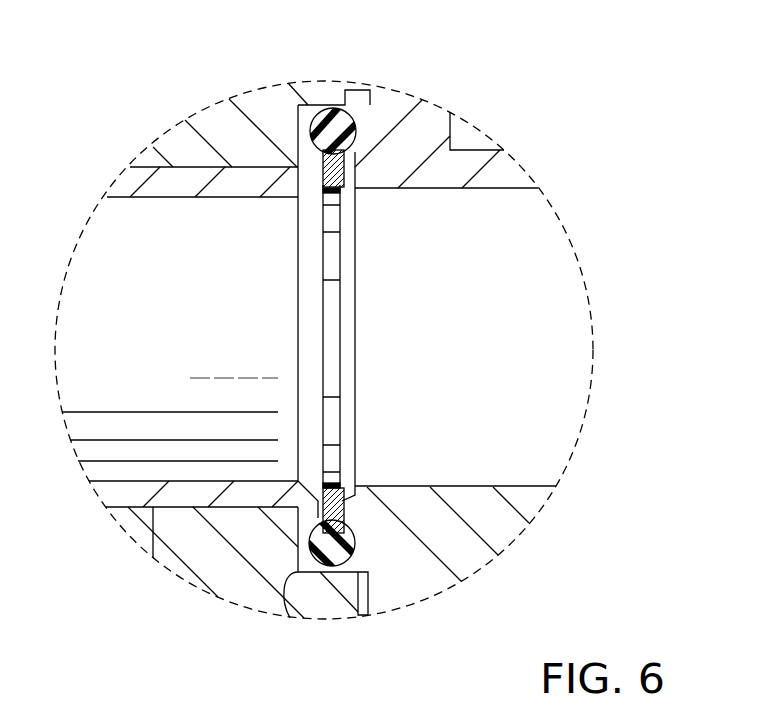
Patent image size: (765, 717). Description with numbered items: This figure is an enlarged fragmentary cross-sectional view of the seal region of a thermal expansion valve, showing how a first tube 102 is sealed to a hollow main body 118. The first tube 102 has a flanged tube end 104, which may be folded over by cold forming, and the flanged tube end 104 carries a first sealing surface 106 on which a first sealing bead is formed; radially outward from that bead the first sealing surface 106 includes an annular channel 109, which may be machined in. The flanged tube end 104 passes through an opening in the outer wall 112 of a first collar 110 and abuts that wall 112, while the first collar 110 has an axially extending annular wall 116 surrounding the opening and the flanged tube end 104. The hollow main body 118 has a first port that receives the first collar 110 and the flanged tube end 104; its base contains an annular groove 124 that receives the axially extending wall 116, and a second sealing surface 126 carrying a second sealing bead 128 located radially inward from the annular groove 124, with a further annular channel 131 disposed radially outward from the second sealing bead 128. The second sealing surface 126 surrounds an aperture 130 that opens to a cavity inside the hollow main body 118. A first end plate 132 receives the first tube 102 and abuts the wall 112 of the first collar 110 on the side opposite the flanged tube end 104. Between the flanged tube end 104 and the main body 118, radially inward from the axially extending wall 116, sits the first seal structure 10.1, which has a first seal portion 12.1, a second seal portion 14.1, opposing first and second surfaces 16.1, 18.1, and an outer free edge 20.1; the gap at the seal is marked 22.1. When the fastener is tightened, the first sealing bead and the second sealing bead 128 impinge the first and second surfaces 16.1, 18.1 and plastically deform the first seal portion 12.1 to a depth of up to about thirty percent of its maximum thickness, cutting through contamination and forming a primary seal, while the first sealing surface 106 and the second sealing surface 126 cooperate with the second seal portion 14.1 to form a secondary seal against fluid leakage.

The first collar 110 is at (153, 167).
The first tube 102 is at (237, 167).
The annular channel 109 is at (305, 103).
The sealing gap 22.1 is at (329, 112).
The annular channel 131 is at (346, 110).
The second sealing bead 128 is at (350, 186).
The second sealing surface 126 is at (322, 185).
The second surface 18.1 is at (318, 140).
The first surface 16.1 is at (350, 143).
The aperture 130 is at (472, 293).
The first seal structure 10.1 is at (341, 382).
The outer free edge 20.1 is at (323, 486).
The first seal portion 12.1 is at (347, 491).
The second seal portion 14.1 is at (355, 538).
The outer wall 112 is at (275, 546).
The first end plate 132 is at (142, 537).
The hollow main body 118 is at (503, 538).
The axially extending annular wall 116 is at (342, 612).
The first sealing surface 106 is at (357, 540).
The annular groove 124 is at (372, 606).
The flanged tube end 104 is at (290, 618).